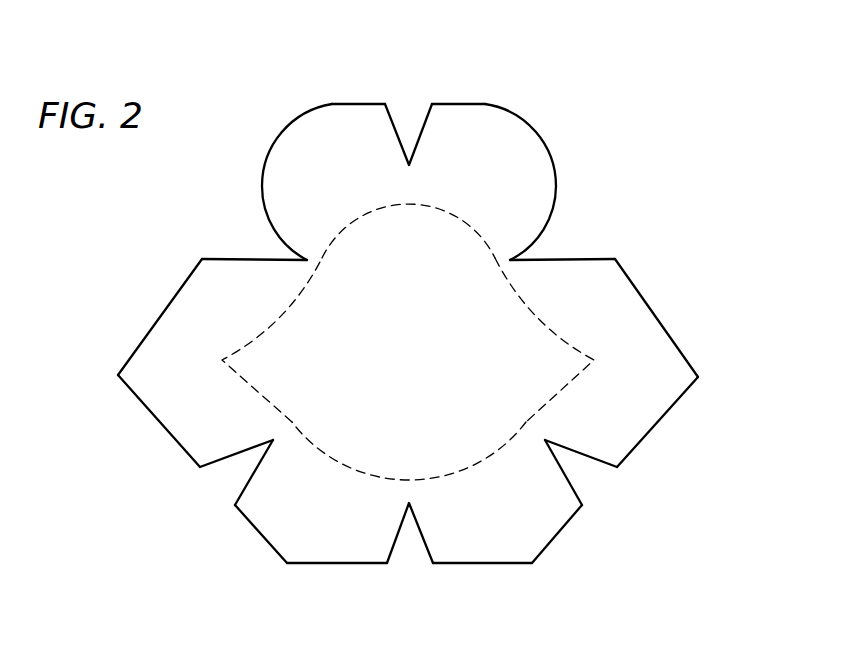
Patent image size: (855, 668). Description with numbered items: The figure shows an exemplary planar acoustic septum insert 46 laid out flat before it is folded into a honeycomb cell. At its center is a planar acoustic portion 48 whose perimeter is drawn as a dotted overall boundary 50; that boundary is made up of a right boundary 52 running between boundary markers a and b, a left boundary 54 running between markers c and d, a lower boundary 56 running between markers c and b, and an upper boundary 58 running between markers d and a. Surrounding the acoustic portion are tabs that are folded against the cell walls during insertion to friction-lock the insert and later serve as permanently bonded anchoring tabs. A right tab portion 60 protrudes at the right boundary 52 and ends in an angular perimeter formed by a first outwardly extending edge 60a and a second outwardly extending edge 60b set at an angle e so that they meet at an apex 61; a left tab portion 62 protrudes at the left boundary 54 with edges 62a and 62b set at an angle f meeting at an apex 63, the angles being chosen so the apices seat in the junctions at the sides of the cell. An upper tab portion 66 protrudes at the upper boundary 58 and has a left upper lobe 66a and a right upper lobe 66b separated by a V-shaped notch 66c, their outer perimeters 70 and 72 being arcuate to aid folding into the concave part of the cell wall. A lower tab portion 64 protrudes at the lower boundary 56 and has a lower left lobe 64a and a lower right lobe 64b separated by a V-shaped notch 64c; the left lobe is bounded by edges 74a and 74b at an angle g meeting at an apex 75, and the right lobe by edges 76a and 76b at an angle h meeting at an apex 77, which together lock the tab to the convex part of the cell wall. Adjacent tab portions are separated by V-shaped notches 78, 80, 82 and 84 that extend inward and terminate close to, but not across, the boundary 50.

The planar acoustic septum insert 46 is at (693, 196).
The planar acoustic portion 48 is at (406, 370).
The overall boundary 50 is at (523, 300).
The right boundary 52 is at (547, 318).
The left boundary 54 is at (240, 380).
The lower boundary 56 is at (385, 479).
The upper boundary 58 is at (477, 233).
The right tab portion 60 is at (637, 327).
The first outwardly extending edge 60a is at (660, 427).
The second outwardly extending edge 60b is at (643, 290).
The apex 61 is at (698, 377).
The left tab portion 62 is at (183, 328).
The first outwardly extending edge 62a is at (157, 427).
The second outwardly extending edge 62b is at (187, 277).
The apex 63 is at (117, 375).
The lower tab portion 64 is at (528, 578).
The lower left lobe 64a is at (265, 493).
The lower right lobe 64b is at (553, 493).
The V-shaped notch 64c is at (412, 552).
The upper tab portion 66 is at (560, 109).
The left upper lobe 66a is at (289, 138).
The right upper lobe 66b is at (480, 104).
The V-shaped notch 66c is at (408, 112).
The outer perimeter 70 is at (328, 104).
The outer perimeter 72 is at (557, 162).
The first outwardly extending edge 74a is at (248, 525).
The second outwardly extending edge 74b is at (348, 564).
The apex 75 is at (287, 564).
The first outwardly extending edge 76a is at (472, 563).
The second outwardly extending edge 76b is at (572, 528).
The apex 77 is at (540, 555).
The V-shaped notch 78 is at (285, 250).
The V-shaped notch 80 is at (527, 252).
The V-shaped notch 82 is at (582, 465).
The V-shaped notch 84 is at (237, 465).
The boundary marker a is at (498, 265).
The boundary marker b is at (534, 430).
The boundary marker c is at (283, 430).
The boundary marker d is at (318, 265).
The angle e is at (666, 340).
The angle f is at (151, 340).
The angle g is at (323, 560).
The angle h is at (552, 535).